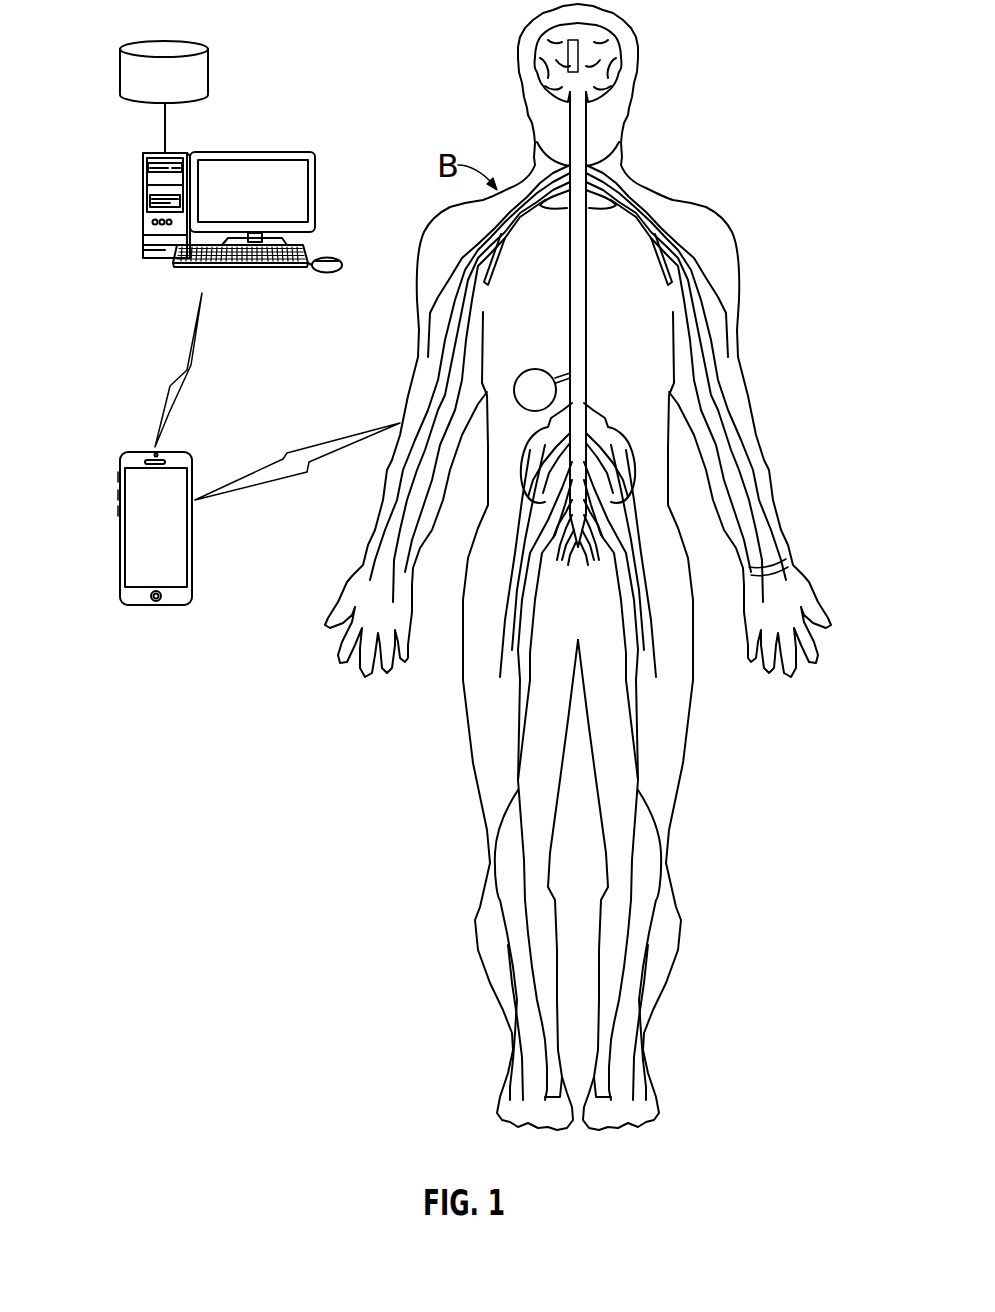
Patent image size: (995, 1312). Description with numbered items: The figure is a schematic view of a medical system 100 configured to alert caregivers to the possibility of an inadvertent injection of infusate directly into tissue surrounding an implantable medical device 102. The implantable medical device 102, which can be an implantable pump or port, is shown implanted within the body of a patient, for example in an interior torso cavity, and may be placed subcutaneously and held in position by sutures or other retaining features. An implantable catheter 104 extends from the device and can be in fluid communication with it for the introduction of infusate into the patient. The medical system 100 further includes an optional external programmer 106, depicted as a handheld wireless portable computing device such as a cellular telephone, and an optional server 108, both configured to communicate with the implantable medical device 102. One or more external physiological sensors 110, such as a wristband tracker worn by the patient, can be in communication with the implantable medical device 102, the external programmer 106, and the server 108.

The medical system 100 is at (664, 96).
The implantable medical device 102 is at (514, 392).
The implantable catheter 104 is at (557, 375).
The external programmer 106 is at (137, 543).
The server 108 is at (143, 230).
The external physiological sensor 110 is at (786, 561).